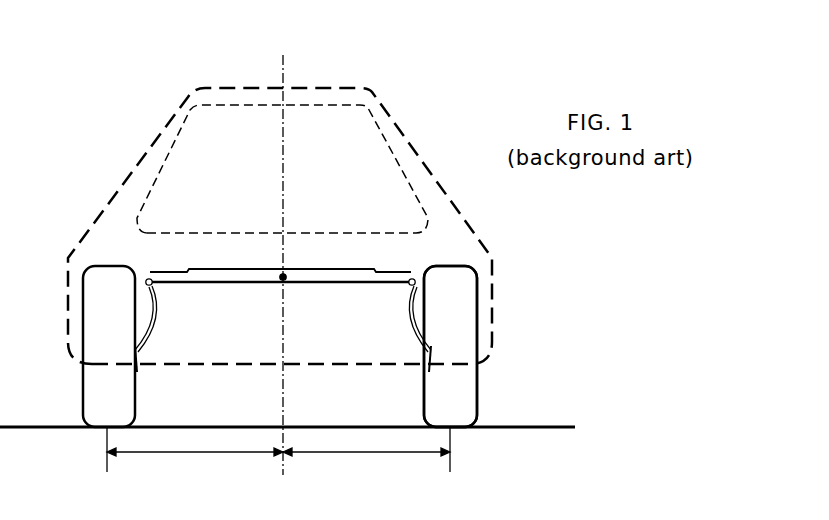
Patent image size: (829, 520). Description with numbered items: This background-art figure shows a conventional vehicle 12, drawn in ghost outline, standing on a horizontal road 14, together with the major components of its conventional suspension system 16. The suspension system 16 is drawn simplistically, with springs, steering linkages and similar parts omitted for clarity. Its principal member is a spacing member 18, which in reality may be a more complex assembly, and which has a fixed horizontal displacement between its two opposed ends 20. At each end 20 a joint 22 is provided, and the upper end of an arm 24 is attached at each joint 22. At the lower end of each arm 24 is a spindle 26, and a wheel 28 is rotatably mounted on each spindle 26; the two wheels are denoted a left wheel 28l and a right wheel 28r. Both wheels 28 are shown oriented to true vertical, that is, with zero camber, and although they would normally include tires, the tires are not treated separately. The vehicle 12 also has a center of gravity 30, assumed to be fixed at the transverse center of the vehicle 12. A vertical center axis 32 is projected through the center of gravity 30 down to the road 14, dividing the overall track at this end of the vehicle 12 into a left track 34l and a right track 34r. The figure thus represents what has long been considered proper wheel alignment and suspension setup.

The vehicle 12 is at (333, 97).
The road 14 is at (577, 427).
The suspension system 16 is at (268, 270).
The spacing member 18 is at (302, 277).
The end 20 is at (160, 284).
The joint 22 is at (147, 279).
The arm 24 is at (158, 326).
The spindle 26 is at (283, 369).
The wheel 28 is at (458, 318).
The left wheel 28l is at (98, 394).
The right wheel 28r is at (458, 395).
The center of gravity 30 is at (280, 275).
The vertical center axis 32 is at (283, 73).
The left track 34l is at (195, 450).
The right track 34r is at (366, 450).